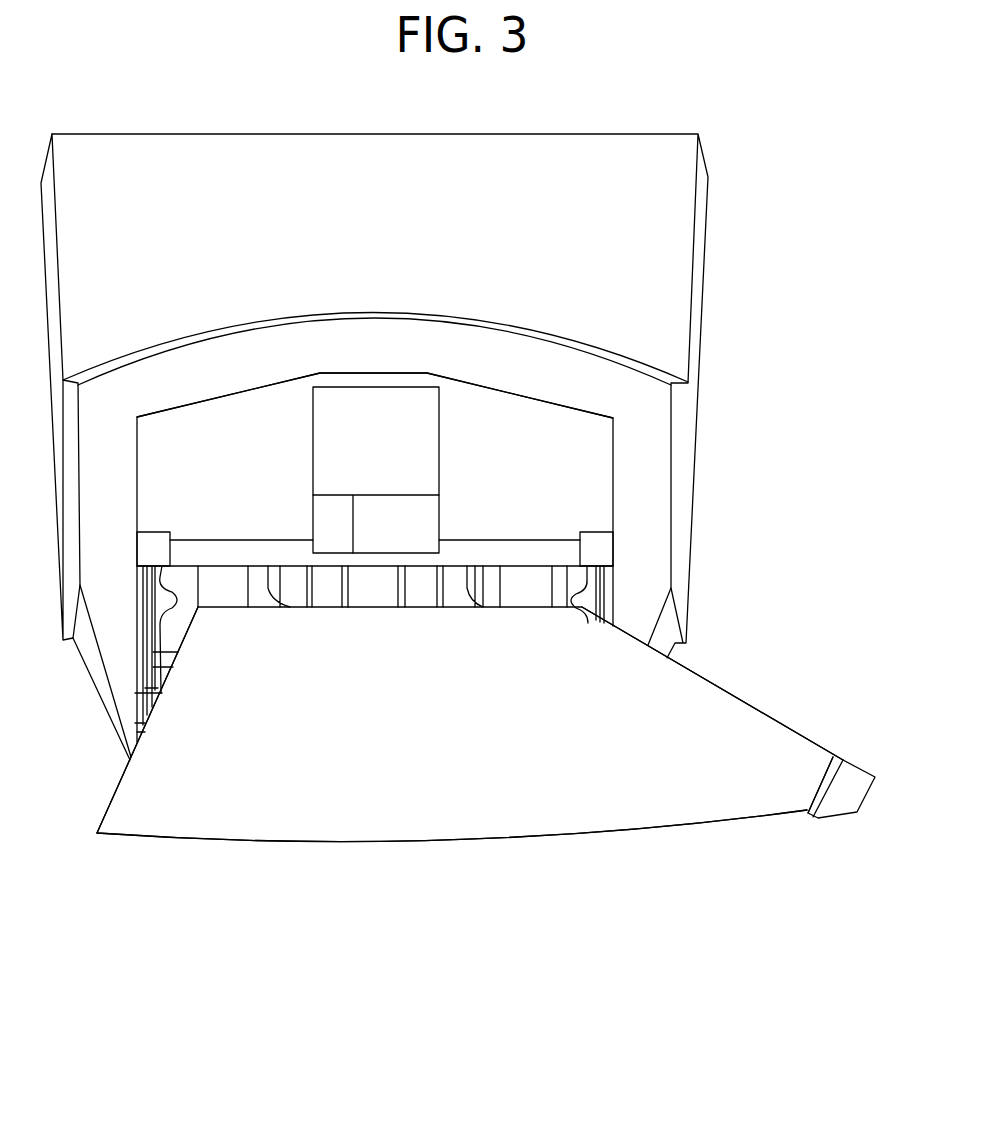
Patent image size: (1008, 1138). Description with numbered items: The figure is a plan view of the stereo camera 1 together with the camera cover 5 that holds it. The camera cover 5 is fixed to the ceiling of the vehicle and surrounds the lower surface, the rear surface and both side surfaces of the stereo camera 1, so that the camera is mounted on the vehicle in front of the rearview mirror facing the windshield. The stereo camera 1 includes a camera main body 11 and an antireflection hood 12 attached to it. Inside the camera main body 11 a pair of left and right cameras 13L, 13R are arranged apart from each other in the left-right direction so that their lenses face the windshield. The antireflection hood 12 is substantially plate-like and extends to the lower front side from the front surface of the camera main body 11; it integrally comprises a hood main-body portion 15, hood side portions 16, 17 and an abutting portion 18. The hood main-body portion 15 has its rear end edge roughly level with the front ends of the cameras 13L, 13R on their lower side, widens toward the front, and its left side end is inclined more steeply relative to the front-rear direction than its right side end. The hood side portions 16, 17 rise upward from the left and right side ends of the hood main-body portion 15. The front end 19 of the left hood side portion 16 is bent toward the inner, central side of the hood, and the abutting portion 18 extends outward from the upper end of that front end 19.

The stereo camera 1 is at (498, 388).
The camera cover 5 is at (680, 470).
The camera main body 11 is at (253, 413).
The antireflection hood 12 is at (542, 838).
The right camera 13R is at (220, 580).
The left camera 13L is at (525, 580).
The hood main-body portion 15 is at (378, 817).
The hood side portion 16 is at (787, 727).
The hood side portion 17 is at (117, 795).
The abutting portion 18 is at (853, 777).
The front end 19 is at (825, 790).